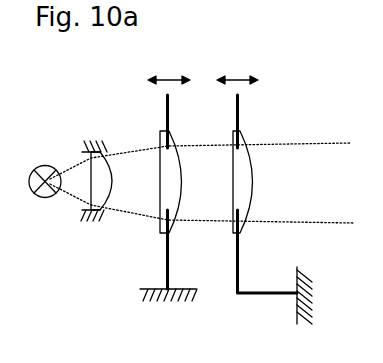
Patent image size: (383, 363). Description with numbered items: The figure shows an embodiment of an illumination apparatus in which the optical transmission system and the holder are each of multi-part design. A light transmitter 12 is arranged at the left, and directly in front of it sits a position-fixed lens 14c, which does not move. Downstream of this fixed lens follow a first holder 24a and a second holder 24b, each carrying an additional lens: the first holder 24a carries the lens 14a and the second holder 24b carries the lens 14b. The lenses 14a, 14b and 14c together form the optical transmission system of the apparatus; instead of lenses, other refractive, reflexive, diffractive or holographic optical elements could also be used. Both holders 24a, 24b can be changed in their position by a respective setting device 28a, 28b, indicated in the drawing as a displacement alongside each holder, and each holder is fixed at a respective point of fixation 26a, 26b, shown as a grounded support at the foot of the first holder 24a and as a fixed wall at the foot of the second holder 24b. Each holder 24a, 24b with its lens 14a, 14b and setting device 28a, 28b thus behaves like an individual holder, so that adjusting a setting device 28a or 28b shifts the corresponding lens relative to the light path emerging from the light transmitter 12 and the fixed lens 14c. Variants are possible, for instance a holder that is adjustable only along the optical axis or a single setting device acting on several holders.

The light transmitter 12 is at (37, 193).
The lens 14a is at (172, 182).
The lens 14b is at (253, 172).
The position-fixed lens 14c is at (86, 158).
The first holder 24a is at (168, 243).
The second holder 24b is at (233, 273).
The point of fixation 26a is at (166, 283).
The point of fixation 26b is at (296, 296).
The setting device 28a is at (148, 80).
The setting device 28b is at (234, 79).